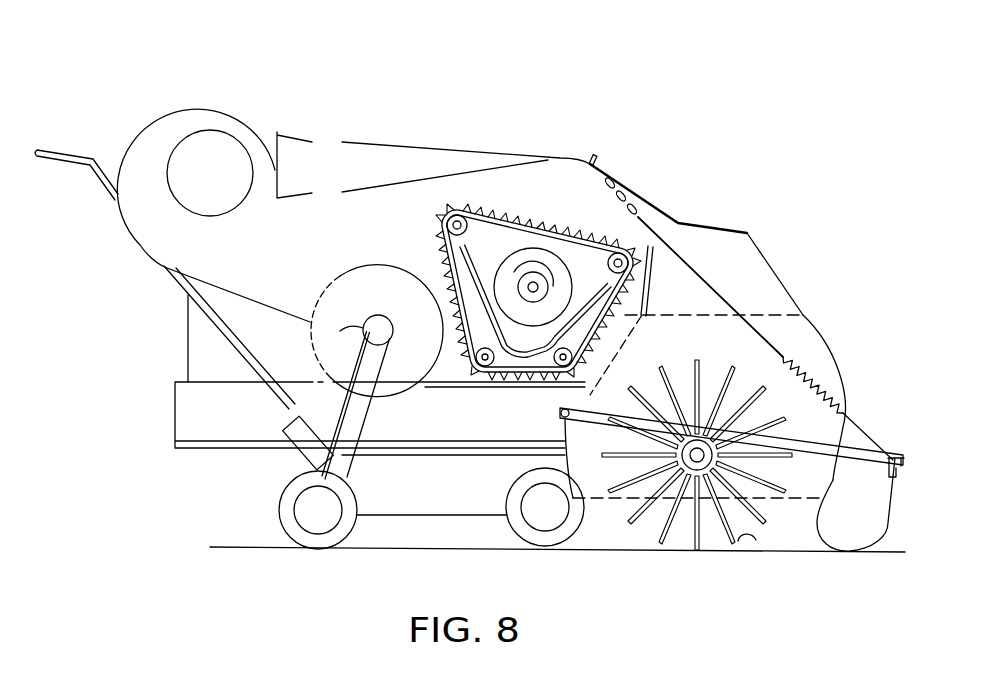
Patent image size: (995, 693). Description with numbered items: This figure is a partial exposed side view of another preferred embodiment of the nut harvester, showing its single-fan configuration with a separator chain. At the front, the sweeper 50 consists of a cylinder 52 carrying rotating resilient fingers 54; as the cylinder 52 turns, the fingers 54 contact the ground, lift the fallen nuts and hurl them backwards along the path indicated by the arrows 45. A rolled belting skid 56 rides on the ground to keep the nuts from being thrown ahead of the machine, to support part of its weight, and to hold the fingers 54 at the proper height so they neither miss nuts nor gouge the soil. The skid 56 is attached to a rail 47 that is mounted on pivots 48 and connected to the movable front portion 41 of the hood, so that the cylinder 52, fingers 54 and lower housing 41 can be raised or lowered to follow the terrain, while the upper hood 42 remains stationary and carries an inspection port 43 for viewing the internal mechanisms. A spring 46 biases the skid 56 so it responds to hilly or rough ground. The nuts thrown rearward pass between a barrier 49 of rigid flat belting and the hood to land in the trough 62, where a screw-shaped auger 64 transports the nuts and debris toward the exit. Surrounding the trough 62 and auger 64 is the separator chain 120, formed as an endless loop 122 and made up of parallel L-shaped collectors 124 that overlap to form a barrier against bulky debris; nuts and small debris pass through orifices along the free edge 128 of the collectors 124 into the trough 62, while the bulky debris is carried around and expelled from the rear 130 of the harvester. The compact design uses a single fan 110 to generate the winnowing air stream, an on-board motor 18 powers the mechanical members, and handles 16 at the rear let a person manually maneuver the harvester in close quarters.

The handles 16 is at (92, 160).
The single fan 110 is at (212, 148).
The sweeper 50 is at (550, 134).
The auger 64 is at (503, 263).
The trough 62 is at (597, 292).
The separator chain 120 is at (510, 210).
The free edge 128 is at (445, 212).
The collectors 124 is at (592, 240).
The endless loop 122 is at (447, 253).
The inspection port 43 is at (713, 227).
The upper hood 42 is at (748, 268).
The barrier 49 is at (655, 223).
The spring 46 is at (817, 375).
The movable front portion of hood 41 is at (810, 328).
The rolled belting skid 56 is at (877, 528).
The rail 47 is at (867, 457).
The pivots 48 is at (560, 412).
The cylinder 52 is at (676, 530).
The resilient fingers 54 is at (745, 541).
The arrows 45 is at (666, 257).
The rear 130 is at (163, 347).
The motor 18 is at (313, 338).